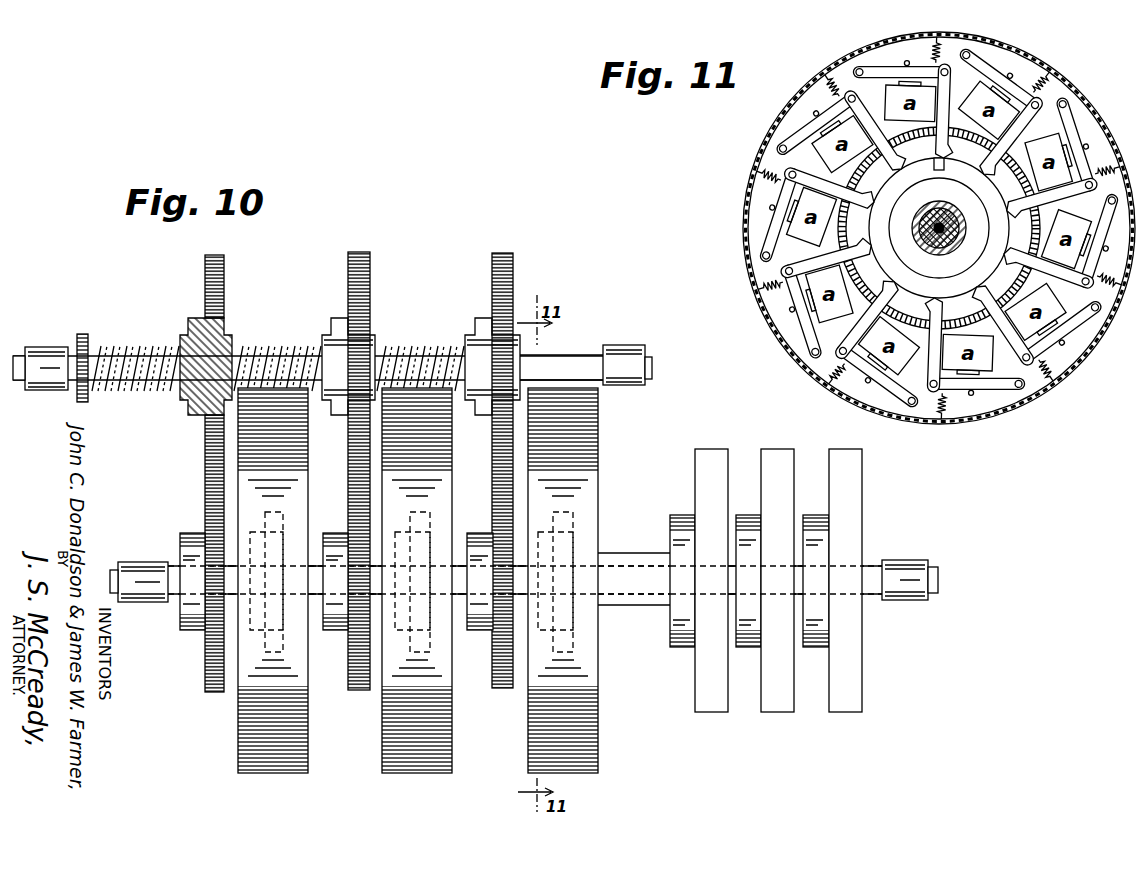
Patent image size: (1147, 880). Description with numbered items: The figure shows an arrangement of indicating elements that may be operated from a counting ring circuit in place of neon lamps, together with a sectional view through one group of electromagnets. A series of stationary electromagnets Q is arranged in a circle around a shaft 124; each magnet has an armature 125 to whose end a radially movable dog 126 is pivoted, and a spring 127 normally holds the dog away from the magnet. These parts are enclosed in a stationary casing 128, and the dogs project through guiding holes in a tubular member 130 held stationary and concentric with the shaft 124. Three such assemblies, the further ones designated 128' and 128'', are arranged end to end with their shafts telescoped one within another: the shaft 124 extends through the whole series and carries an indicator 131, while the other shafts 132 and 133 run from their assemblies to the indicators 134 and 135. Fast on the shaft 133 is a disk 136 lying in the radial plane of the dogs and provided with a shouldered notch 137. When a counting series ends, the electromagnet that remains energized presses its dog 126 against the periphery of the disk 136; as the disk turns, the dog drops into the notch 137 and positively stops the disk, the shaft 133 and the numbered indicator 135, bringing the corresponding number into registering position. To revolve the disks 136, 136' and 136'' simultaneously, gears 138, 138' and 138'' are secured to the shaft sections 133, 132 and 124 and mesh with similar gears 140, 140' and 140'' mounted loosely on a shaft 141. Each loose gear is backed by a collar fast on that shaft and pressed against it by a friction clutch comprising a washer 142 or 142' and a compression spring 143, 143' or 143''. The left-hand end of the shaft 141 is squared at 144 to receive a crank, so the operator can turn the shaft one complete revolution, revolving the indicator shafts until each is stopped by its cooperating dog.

In FIG. 10, the shaft 124 is at (882, 565).
In FIG. 11, the shaft 124 is at (946, 214).
In FIG. 11, the armature 125 is at (985, 388).
In FIG. 11, the dog 126 is at (1022, 357).
In FIG. 11, the spring 127 is at (1047, 378).
In FIG. 10, the stationary casing 128 is at (584, 592).
In FIG. 11, the stationary casing 128 is at (939, 226).
In FIG. 10, the assembly 128' is at (417, 599).
In FIG. 10, the assembly 128'' is at (281, 599).
In FIG. 11, the tubular member 130 is at (925, 318).
In FIG. 10, the indicator 131 is at (846, 713).
In FIG. 10, the shaft 132 is at (612, 566).
In FIG. 11, the shaft 132 is at (921, 246).
In FIG. 10, the shaft 133 is at (652, 607).
In FIG. 11, the shaft 133 is at (955, 250).
In FIG. 10, the indicator 134 is at (780, 713).
In FIG. 10, the indicator 135 is at (708, 713).
In FIG. 10, the disk 136 is at (558, 568).
In FIG. 11, the disk 136 is at (939, 237).
In FIG. 10, the disk 136' is at (416, 568).
In FIG. 10, the disk 136'' is at (275, 568).
In FIG. 11, the shouldered notch 137 is at (937, 171).
In FIG. 10, the gear 138 is at (486, 627).
In FIG. 10, the gear 138' is at (347, 627).
In FIG. 10, the gear 138'' is at (202, 627).
In FIG. 10, the gear 140 is at (495, 458).
In FIG. 10, the gear 140' is at (379, 459).
In FIG. 10, the gear 140'' is at (244, 462).
In FIG. 10, the shaft 141 is at (576, 357).
In FIG. 10, the washer 142 is at (475, 350).
In FIG. 10, the washer 142' is at (259, 350).
In FIG. 10, the compression spring 143 is at (420, 354).
In FIG. 10, the compression spring 143' is at (277, 354).
In FIG. 10, the compression spring 143'' is at (135, 353).
In FIG. 10, the squared end 144 is at (22, 357).